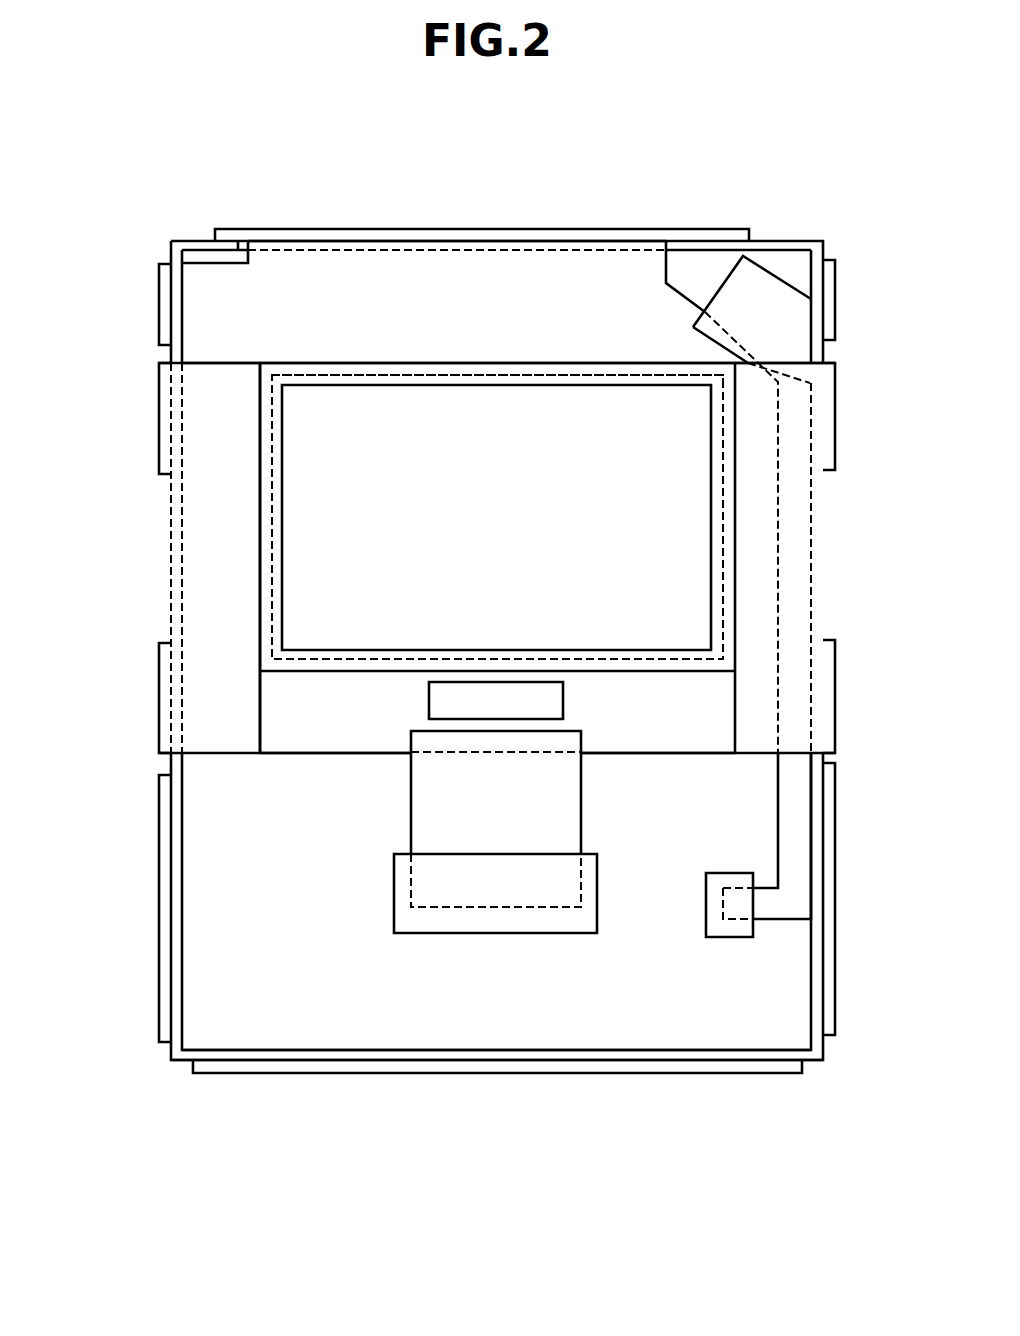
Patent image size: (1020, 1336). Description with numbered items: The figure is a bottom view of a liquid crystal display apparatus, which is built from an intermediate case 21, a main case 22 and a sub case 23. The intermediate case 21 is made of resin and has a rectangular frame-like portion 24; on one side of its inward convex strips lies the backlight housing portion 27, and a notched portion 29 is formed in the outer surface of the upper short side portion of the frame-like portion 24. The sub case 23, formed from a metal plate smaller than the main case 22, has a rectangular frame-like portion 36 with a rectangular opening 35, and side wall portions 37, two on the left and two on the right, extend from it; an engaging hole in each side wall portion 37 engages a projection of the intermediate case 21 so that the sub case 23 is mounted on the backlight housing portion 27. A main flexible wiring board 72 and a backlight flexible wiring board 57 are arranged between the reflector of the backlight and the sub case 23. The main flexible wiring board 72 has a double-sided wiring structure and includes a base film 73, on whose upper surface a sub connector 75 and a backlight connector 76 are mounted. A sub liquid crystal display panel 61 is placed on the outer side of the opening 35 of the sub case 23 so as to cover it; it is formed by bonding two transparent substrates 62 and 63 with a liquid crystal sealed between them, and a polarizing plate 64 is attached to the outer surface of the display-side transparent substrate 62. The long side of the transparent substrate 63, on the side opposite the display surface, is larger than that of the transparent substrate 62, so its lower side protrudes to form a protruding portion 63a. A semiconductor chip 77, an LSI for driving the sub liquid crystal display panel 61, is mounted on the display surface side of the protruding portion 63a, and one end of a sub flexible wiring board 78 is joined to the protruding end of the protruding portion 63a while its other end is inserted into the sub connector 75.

The intermediate case 21 is at (790, 232).
The main case 22 is at (305, 229).
The sub case 23 is at (228, 755).
The frame-like portion 24 is at (727, 240).
The backlight housing portion 27 is at (526, 1048).
The notched portion 29 is at (675, 240).
The opening 35 is at (395, 388).
The frame-like portion 36 is at (225, 381).
The side wall portions 37 is at (165, 418).
The backlight flexible wiring board 57 is at (790, 302).
The sub liquid crystal display panel 61 is at (313, 755).
The transparent substrate 62 is at (265, 638).
The transparent substrate 63 is at (368, 740).
The protruding portion 63a is at (670, 740).
The polarizing plate 64 is at (312, 546).
The main flexible wiring board 72 is at (533, 285).
The base film 73 is at (596, 255).
The sub connector 75 is at (462, 923).
The backlight connector 76 is at (728, 930).
The semiconductor chip 77 is at (489, 697).
The sub flexible wiring board 78 is at (570, 832).